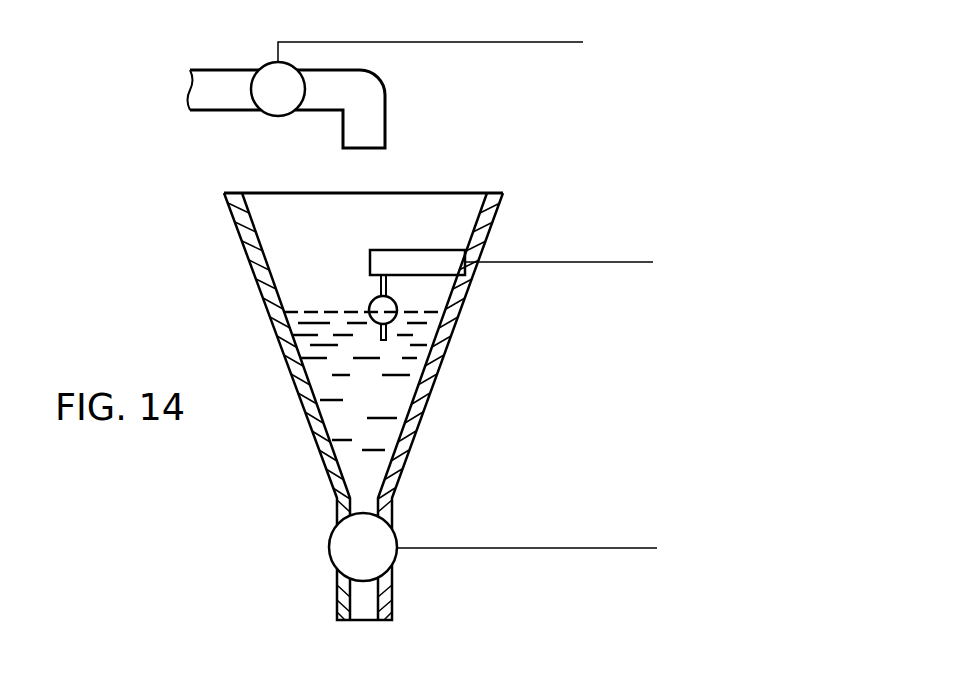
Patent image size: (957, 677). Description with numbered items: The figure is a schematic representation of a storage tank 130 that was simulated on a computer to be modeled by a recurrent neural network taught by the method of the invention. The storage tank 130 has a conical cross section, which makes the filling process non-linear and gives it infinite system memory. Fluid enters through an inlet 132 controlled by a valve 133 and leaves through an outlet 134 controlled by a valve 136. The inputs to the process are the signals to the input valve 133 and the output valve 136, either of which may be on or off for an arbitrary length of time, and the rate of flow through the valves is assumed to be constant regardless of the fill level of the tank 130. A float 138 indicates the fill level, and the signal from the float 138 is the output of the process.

The storage tank 130 is at (455, 362).
The inlet 132 is at (383, 93).
The inlet valve 133 is at (282, 117).
The outlet 134 is at (367, 601).
The outlet valve 136 is at (331, 531).
The float 138 is at (449, 262).